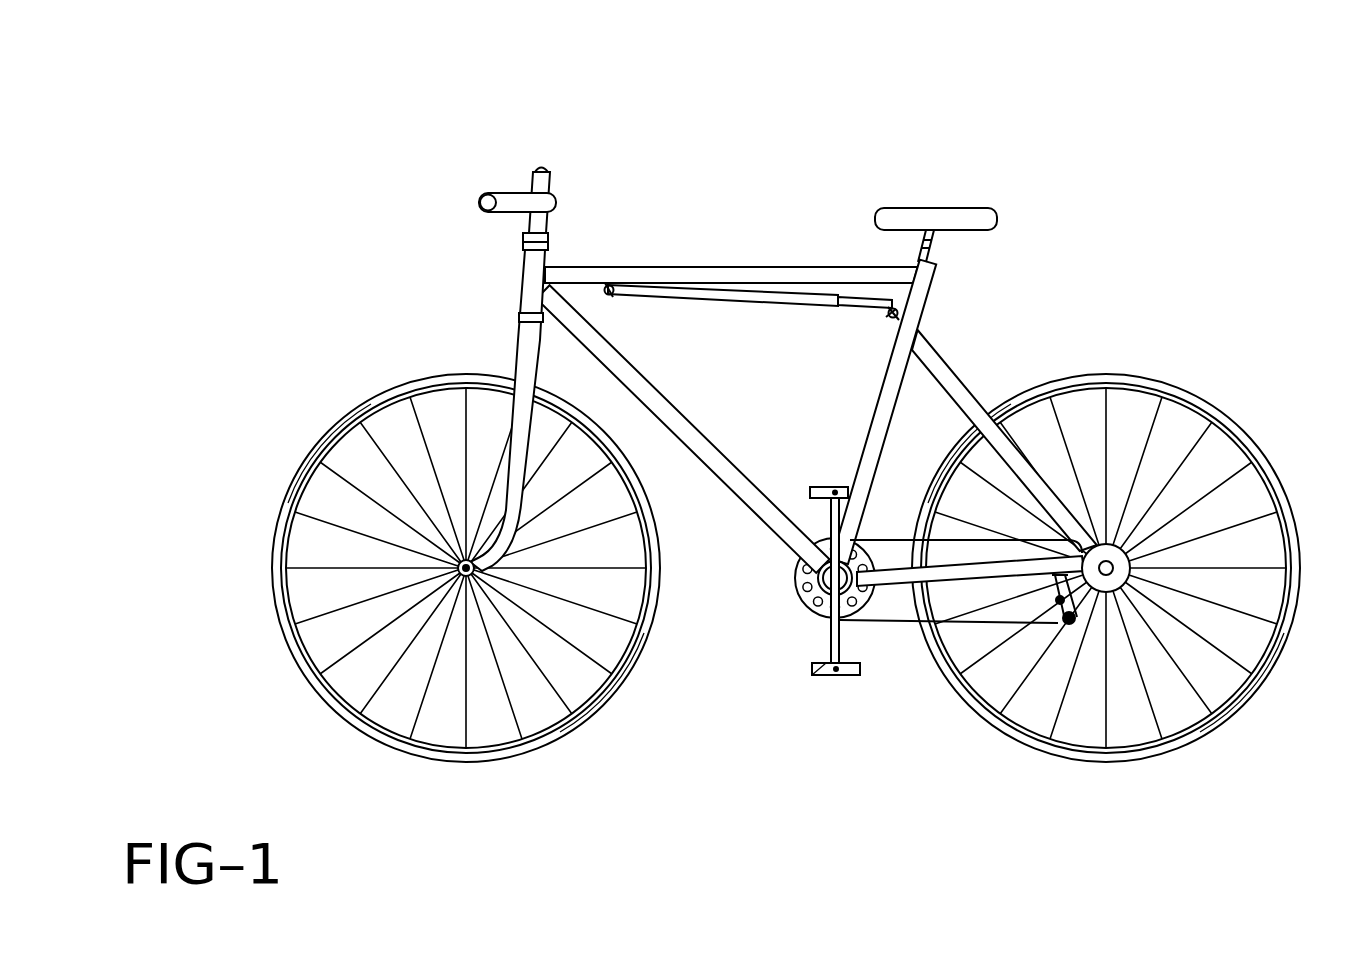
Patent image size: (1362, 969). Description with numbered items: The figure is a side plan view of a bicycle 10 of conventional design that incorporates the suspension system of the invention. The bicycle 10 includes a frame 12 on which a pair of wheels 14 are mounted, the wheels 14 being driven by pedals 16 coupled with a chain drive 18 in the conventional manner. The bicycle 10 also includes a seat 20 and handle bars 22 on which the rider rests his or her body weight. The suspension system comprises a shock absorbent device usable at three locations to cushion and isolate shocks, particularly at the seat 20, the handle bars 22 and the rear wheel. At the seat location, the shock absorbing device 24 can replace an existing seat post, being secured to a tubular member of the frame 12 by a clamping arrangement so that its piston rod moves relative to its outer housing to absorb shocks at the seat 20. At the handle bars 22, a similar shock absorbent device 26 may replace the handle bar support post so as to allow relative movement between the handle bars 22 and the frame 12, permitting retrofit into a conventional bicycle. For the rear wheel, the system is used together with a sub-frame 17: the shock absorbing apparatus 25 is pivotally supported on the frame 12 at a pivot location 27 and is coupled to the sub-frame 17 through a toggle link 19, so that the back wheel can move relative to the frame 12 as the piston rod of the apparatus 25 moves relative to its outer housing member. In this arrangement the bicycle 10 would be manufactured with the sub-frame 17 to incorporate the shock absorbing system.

The bicycle 10 is at (360, 343).
The frame 12 is at (636, 216).
The wheels 14 is at (282, 557).
The pedals 16 is at (813, 672).
The sub-frame 17 is at (1025, 568).
The chain drive 18 is at (976, 625).
The toggle link 19 is at (888, 318).
The seat 20 is at (973, 217).
The handle bars 22 is at (480, 195).
The shock absorbing device 24 is at (937, 245).
The shock absorbing apparatus 25 is at (750, 302).
The shock absorbent device 26 is at (530, 236).
The pivot location 27 is at (613, 296).